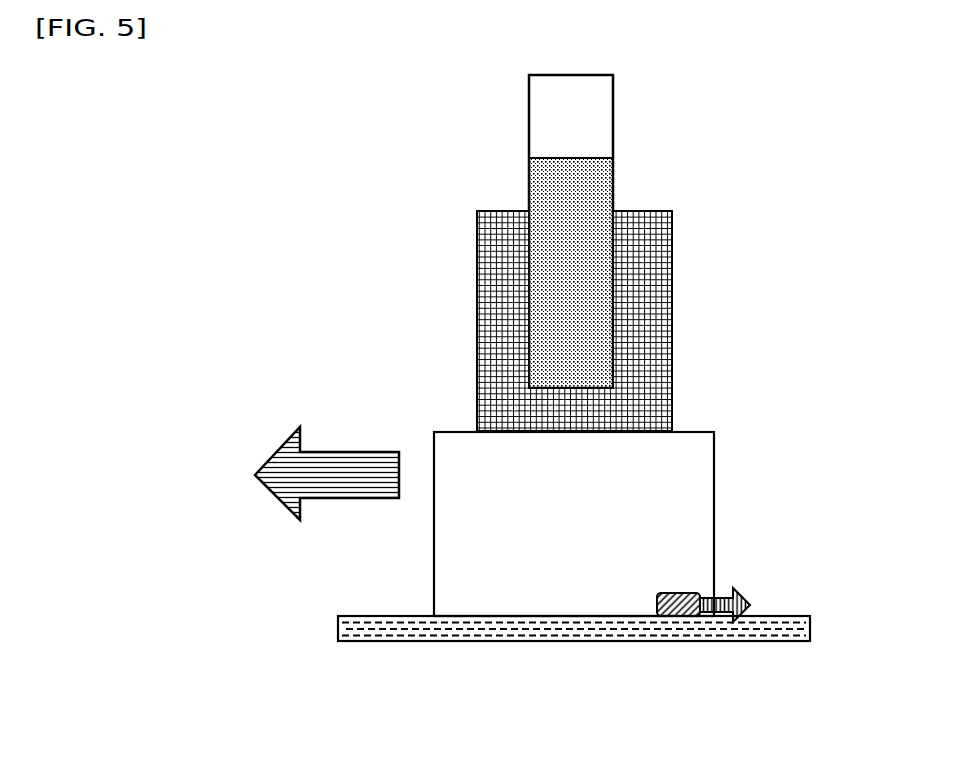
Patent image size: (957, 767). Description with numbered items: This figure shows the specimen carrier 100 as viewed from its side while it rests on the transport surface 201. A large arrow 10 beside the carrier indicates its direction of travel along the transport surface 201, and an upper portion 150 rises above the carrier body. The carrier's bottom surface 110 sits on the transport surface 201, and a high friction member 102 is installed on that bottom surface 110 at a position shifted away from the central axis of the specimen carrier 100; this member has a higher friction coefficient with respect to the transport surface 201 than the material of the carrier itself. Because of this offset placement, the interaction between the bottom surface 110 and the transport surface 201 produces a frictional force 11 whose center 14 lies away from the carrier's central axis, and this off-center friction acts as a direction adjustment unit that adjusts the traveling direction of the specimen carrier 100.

The cylinder / reservoir 150 is at (613, 142).
The specimen carrier 100 is at (447, 431).
The bottom surface 110 is at (478, 616).
The movement direction arrow 10 is at (275, 498).
The center of frictional force 14 is at (675, 612).
The high friction member 102 is at (680, 592).
The transport surface 201 is at (522, 642).
The frictional force 11 is at (723, 620).